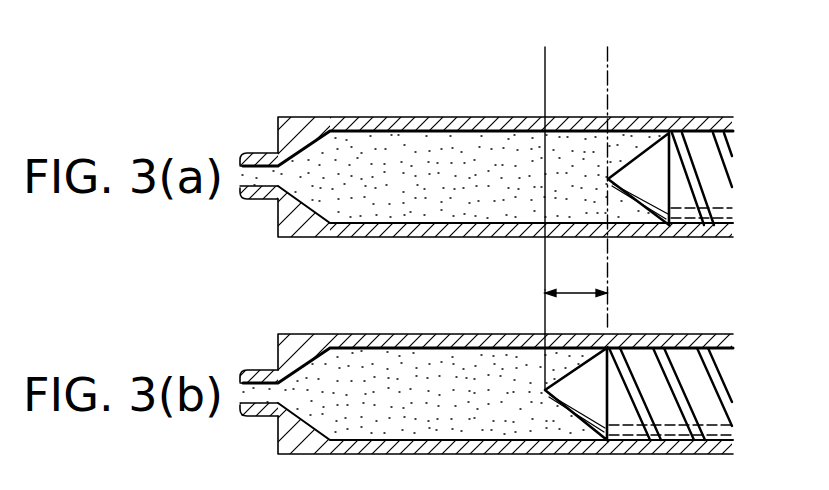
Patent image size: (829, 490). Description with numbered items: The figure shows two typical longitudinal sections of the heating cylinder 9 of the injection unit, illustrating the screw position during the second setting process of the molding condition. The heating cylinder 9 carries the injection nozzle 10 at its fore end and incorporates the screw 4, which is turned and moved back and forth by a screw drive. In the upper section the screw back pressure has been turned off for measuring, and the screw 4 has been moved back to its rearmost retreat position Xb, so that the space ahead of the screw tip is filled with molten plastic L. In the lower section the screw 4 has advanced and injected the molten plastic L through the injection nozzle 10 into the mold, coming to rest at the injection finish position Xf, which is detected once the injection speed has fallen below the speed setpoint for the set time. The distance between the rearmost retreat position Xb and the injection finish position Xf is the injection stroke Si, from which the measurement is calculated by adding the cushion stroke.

In FIG. 3A, the screw 4 is at (710, 120).
In FIG. 3B, the screw 4 is at (683, 340).
In FIG. 3A, the heating cylinder 9 is at (391, 117).
In FIG. 3B, the heating cylinder 9 is at (420, 334).
In FIG. 3A, the injection nozzle 10 is at (248, 153).
In FIG. 3B, the injection nozzle 10 is at (247, 370).
In FIG. 3A, the molten plastic L is at (452, 148).
In FIG. 3B, the molten plastic L is at (484, 365).
In FIG. 3A, the injection finish position Xf is at (542, 150).
In FIG. 3A, the rearmost retreat position Xb is at (615, 150).
In FIG. 3B, the injection stroke Si is at (576, 274).